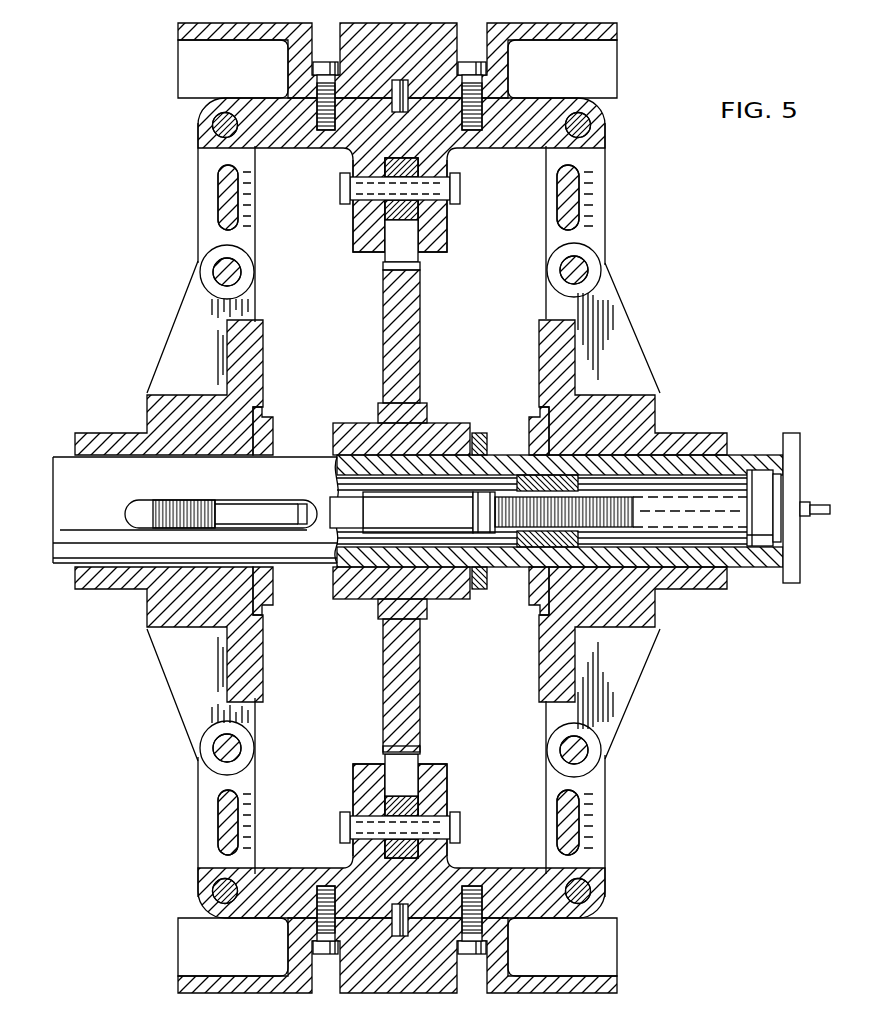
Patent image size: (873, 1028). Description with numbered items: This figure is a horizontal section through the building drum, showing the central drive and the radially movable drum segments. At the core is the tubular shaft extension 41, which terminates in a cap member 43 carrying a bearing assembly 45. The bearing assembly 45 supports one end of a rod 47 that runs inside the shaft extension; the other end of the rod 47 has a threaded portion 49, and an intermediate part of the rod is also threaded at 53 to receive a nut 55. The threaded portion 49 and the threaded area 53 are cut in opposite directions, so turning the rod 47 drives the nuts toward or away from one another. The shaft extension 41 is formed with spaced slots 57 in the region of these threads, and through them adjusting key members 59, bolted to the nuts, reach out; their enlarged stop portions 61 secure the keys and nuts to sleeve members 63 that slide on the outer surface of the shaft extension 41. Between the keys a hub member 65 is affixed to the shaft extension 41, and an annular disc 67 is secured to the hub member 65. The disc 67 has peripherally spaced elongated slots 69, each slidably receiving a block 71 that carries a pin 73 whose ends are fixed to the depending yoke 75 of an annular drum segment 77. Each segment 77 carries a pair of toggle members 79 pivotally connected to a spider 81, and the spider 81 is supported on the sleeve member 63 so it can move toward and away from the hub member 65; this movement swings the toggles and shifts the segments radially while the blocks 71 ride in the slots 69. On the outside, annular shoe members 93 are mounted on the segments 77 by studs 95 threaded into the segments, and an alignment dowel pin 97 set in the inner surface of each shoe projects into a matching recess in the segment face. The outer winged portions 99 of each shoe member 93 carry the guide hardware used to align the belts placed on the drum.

The tubular shaft extension 41 is at (732, 490).
The cap member 43 is at (790, 460).
The bearing assembly 45 is at (763, 498).
The rod 47 is at (722, 505).
The threaded portion 49 is at (193, 503).
The threaded area 53 is at (615, 505).
The nut 55 is at (525, 480).
The slots 57 is at (145, 507).
The adjusting key members 59 is at (243, 507).
The enlarged stop portions 61 is at (270, 422).
The sleeve members 63 is at (110, 445).
The hub member 65 is at (441, 425).
The annular disc 67 is at (400, 327).
The elongated slots 69 is at (403, 250).
The block 71 is at (393, 206).
The pin 73 is at (338, 183).
The depending yoke 75 is at (365, 246).
The annular drum segment 77 is at (600, 142).
The toggle members 79 is at (207, 203).
The spider 81 is at (185, 335).
The annular shoe members 93 is at (495, 40).
The studs 95 is at (312, 50).
The alignment dowel pin 97 is at (447, 158).
The outer winged portions 99 is at (574, 33).